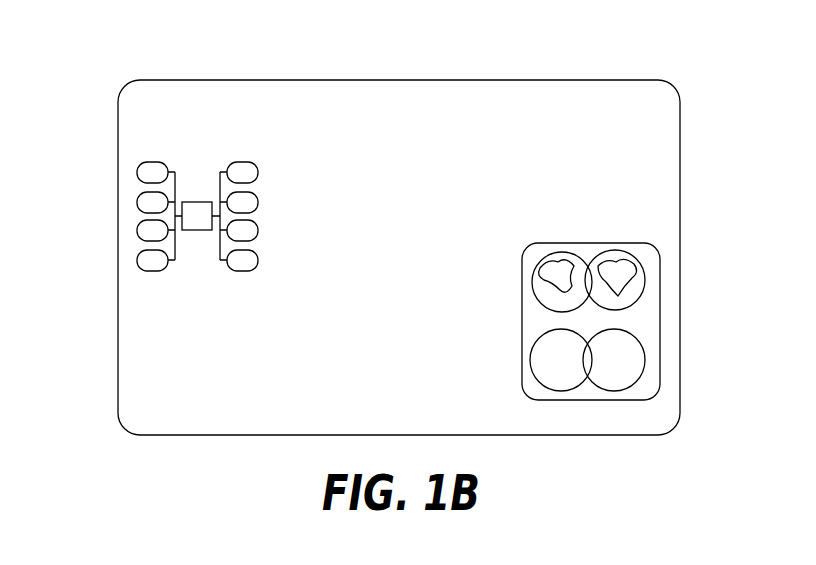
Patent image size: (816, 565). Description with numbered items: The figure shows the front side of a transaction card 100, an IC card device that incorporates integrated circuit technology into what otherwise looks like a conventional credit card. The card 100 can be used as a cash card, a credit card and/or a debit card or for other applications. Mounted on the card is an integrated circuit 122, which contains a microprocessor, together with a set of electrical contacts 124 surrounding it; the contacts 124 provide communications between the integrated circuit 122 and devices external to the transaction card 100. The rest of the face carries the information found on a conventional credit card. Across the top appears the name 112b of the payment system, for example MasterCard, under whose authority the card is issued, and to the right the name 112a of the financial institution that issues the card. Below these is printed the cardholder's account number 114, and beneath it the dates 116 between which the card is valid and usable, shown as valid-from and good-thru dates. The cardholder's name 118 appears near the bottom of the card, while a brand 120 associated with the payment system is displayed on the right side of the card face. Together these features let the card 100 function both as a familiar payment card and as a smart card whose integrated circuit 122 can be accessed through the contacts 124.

The transaction card 100 is at (400, 80).
The name of a financial institution 112a is at (590, 178).
The name of a payment system 112b is at (250, 100).
The cardholder's account number 114 is at (140, 300).
The dates 116 is at (140, 346).
The cardholder's name 118 is at (140, 387).
The brand 120 is at (625, 392).
The integrated circuit 122 is at (197, 202).
The electrical contacts 124 is at (228, 163).